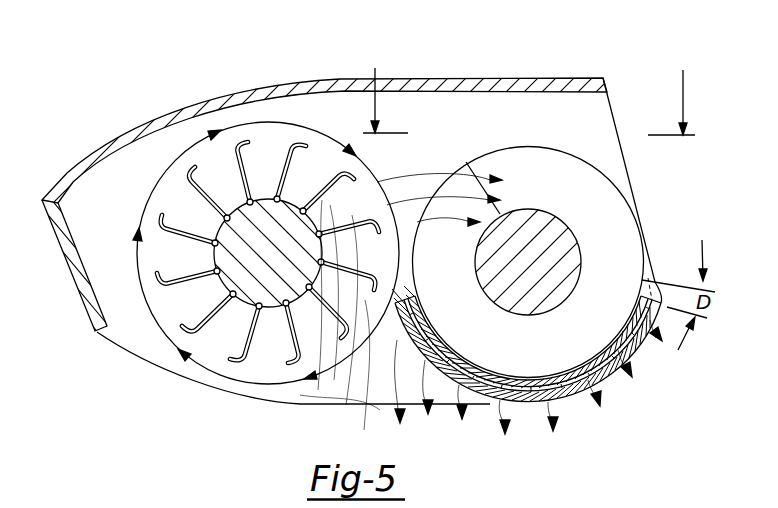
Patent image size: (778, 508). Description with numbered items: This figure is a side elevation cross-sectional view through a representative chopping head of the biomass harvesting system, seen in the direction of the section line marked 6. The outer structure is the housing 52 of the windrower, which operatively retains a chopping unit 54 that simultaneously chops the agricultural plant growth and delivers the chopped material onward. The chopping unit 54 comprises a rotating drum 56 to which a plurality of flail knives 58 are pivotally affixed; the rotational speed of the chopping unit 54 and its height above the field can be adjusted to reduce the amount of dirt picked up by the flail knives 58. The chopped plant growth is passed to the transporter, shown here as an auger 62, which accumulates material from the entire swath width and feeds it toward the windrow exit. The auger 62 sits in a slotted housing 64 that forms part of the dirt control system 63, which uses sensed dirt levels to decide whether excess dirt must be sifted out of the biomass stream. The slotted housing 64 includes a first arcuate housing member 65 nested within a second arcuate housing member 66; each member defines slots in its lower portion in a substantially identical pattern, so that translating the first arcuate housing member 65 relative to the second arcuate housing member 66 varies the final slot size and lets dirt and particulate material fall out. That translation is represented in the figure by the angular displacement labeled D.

The housing 52 is at (422, 79).
The chopping unit 54 is at (244, 366).
The rotating drum 56 is at (214, 231).
The flail knives 58 is at (324, 190).
The auger 62 is at (537, 147).
The dirt control system 63 is at (415, 347).
The slotted housing 64 is at (477, 398).
The first arcuate housing member 65 is at (207, 503).
The second arcuate housing member 66 is at (612, 376).
The section line 6- 6 is at (529, 88).